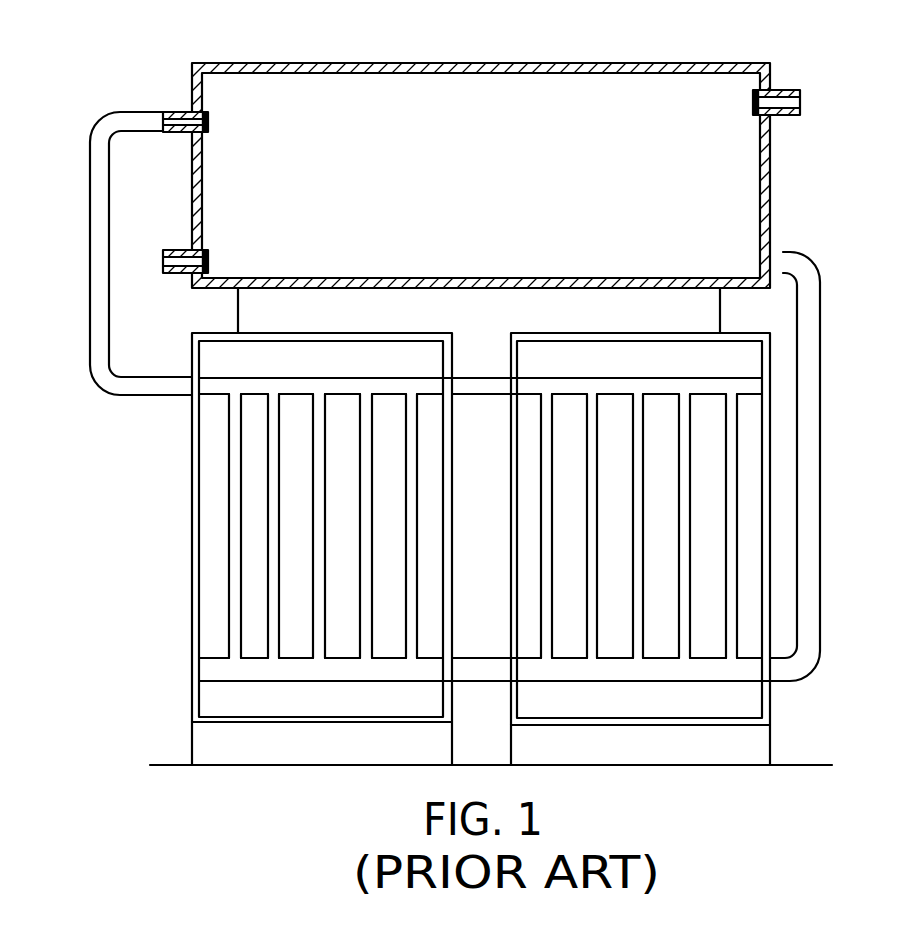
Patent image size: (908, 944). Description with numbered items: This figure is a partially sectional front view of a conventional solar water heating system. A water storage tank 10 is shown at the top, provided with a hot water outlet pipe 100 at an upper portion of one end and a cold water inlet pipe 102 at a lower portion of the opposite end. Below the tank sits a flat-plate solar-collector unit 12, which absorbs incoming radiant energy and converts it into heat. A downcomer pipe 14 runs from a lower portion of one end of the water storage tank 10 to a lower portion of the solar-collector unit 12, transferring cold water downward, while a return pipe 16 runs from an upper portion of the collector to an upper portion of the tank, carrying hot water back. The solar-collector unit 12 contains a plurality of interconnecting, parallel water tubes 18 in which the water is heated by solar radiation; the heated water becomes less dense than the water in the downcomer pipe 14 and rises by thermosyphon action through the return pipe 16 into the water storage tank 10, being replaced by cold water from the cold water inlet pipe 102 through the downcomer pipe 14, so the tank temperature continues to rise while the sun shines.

The water storage tank 10 is at (533, 63).
The hot water outlet pipe 100 is at (800, 116).
The cold water inlet pipe 102 is at (176, 274).
The return pipe 16 is at (108, 214).
The downcomer pipe 14 is at (812, 484).
The solar-collector unit 12 is at (512, 552).
The water tubes 18 is at (545, 441).